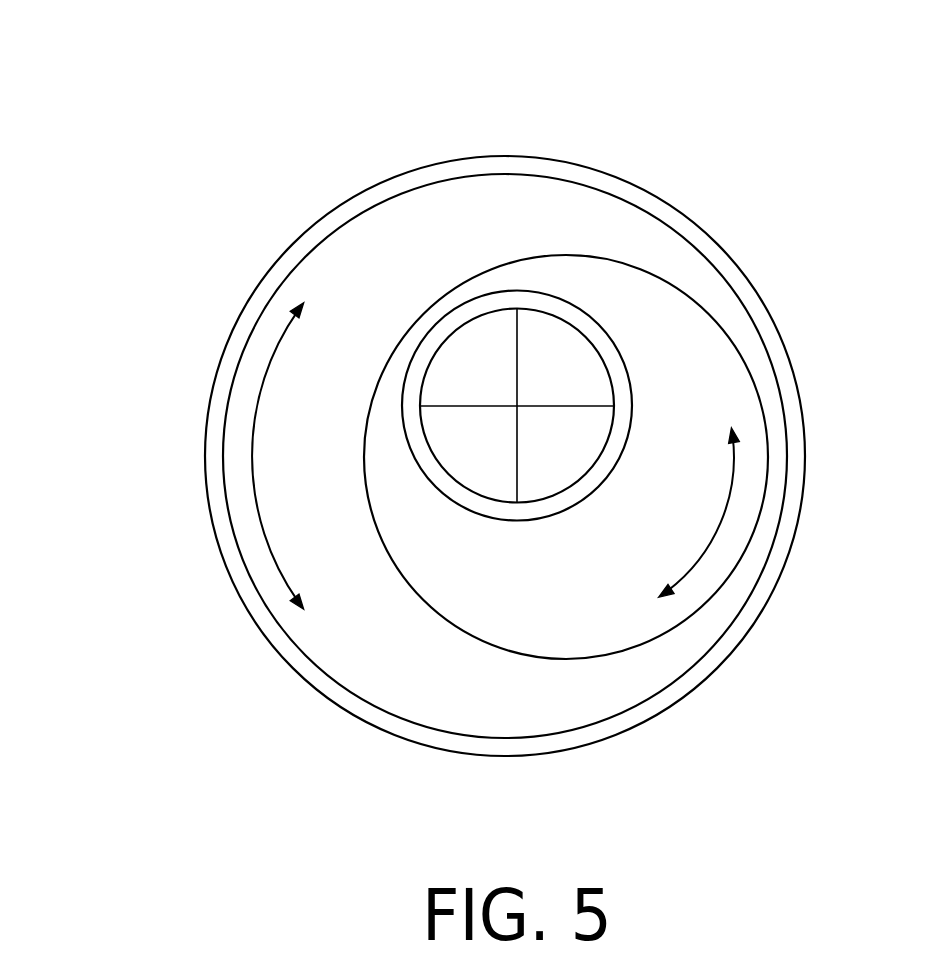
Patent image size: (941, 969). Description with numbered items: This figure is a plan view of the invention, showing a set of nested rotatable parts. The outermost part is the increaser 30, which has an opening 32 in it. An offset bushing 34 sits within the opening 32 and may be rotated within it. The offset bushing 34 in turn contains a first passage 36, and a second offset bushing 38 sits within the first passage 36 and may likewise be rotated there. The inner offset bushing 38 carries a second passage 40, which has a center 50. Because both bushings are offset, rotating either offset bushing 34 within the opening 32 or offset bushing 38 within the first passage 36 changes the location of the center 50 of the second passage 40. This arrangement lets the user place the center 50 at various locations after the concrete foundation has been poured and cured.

The increaser 30 is at (465, 432).
The opening 32 is at (472, 507).
The offset bushing 34 is at (495, 324).
The first passage 36 is at (636, 547).
The offset bushing 38 is at (785, 403).
The second passage 40 is at (624, 316).
The center 50 is at (436, 270).